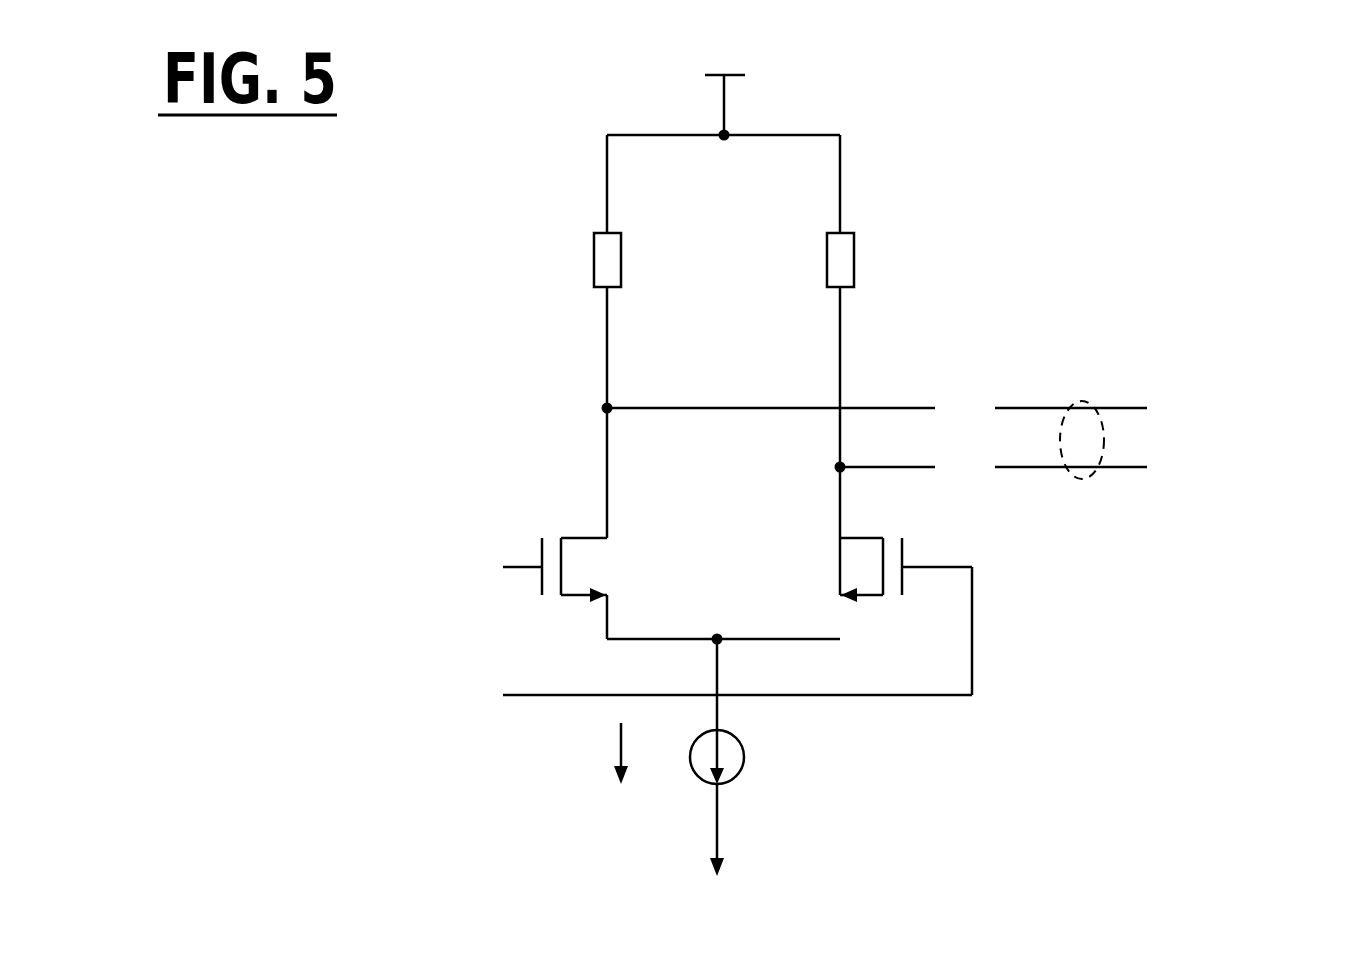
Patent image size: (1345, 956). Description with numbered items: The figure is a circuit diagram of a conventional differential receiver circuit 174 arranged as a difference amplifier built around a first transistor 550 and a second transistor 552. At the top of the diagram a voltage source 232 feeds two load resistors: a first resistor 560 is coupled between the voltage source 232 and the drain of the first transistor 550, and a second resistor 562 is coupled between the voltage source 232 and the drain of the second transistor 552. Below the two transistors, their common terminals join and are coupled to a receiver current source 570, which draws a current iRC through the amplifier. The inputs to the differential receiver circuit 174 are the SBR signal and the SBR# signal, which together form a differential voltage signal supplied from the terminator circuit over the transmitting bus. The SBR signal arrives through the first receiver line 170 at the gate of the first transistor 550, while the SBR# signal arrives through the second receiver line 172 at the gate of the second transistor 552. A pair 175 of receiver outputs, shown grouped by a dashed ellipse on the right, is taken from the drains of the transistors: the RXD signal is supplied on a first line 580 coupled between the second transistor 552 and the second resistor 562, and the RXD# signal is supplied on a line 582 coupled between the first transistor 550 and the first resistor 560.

The differential receiver circuit 174 is at (565, 187).
The voltage source 232 is at (740, 77).
The first resistor 560 is at (621, 258).
The second resistor 562 is at (827, 258).
The line for RXD# signal 582 is at (964, 410).
The first line for RXD signal 580 is at (1073, 469).
The pair of receiver outputs 175 is at (1075, 402).
The first transistor 550 is at (610, 566).
The second transistor 552 is at (838, 566).
The first receiver line 170 is at (407, 567).
The second receiver line 172 is at (407, 694).
The receiver current source 570 is at (737, 777).